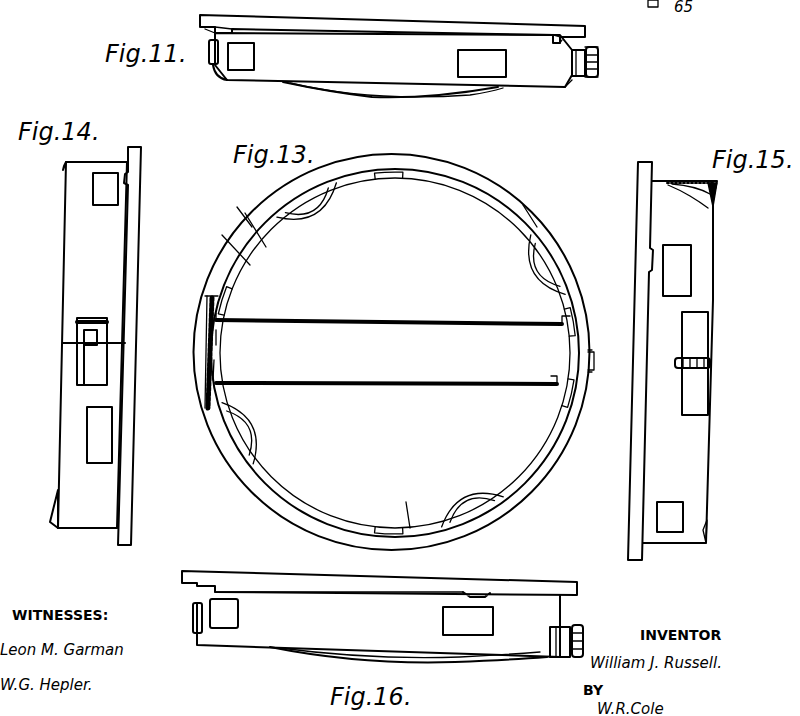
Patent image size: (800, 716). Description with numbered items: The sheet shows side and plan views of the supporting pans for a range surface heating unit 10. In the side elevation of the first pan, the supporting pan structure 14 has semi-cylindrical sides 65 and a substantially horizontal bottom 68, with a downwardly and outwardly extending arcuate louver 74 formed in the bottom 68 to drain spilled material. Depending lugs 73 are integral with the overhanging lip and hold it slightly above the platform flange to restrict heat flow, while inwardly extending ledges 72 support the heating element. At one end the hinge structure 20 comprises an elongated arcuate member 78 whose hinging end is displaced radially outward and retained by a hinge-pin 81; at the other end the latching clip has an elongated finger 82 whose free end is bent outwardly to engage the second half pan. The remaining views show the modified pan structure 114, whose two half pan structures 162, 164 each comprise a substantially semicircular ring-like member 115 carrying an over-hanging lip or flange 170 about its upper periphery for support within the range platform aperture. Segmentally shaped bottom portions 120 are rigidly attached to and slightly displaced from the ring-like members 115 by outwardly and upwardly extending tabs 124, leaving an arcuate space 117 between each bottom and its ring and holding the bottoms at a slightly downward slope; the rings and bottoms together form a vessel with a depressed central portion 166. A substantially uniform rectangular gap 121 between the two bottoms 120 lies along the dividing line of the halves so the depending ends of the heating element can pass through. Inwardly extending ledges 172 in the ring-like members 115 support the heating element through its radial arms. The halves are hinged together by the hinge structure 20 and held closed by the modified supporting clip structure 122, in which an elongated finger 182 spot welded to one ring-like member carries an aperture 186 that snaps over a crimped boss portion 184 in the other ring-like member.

In FIG. 11, the range surface heating unit 10 is at (393, 74).
In FIG. 11, the supporting pan structure 14 is at (316, 40).
In FIG. 11, the hinge structure 20 is at (598, 63).
In FIG. 13, the hinge structure 20 is at (591, 357).
In FIG. 15, the hinge structure 20 is at (705, 361).
In FIG. 16, the hinge structure 20 is at (572, 630).
In FIG. 11, the semi-cylindrical sides 65 is at (213, 32).
In FIG. 11, the bottom 68 is at (254, 75).
In FIG. 11, the ledges 72 is at (243, 62).
In FIG. 11, the depending lugs 73 is at (232, 28).
In FIG. 11, the arcuate louvers 74 is at (368, 106).
In FIG. 11, the elongated arcuate member 78 is at (572, 68).
In FIG. 11, the hinge-pin 81 is at (596, 50).
In FIG. 13, the hinge-pin 81 is at (593, 366).
In FIG. 15, the hinge-pin 81 is at (680, 366).
In FIG. 16, the hinge-pin 81 is at (579, 625).
In FIG. 11, the elongated finger 82 is at (214, 64).
In FIG. 14, the modified pan structure 114 is at (70, 230).
In FIG. 13, the modified pan structure 114 is at (232, 214).
In FIG. 15, the modified pan structure 114 is at (656, 228).
In FIG. 16, the modified pan structure 114 is at (197, 598).
In FIG. 14, the ring-like member 115 is at (82, 520).
In FIG. 13, the ring-like member 115 is at (485, 190).
In FIG. 15, the ring-like member 115 is at (662, 186).
In FIG. 16, the ring-like member 115 is at (228, 640).
In FIG. 13, the arcuate space 117 is at (522, 230).
In FIG. 13, the segmentally shaped bottom portions 120 is at (430, 200).
In FIG. 13, the rectangular gap 121 is at (500, 375).
In FIG. 14, the supporting clip structure 122 is at (78, 382).
In FIG. 13, the supporting clip structure 122 is at (205, 330).
In FIG. 16, the supporting clip structure 122 is at (193, 628).
In FIG. 14, the tabs 124 is at (65, 163).
In FIG. 13, the tabs 124 is at (394, 180).
In FIG. 15, the tabs 124 is at (713, 195).
In FIG. 14, the half pan structure 162 is at (113, 242).
In FIG. 13, the half pan structure 162 is at (248, 258).
In FIG. 15, the half pan structure 162 is at (656, 205).
In FIG. 14, the half pan structure 164 is at (113, 486).
In FIG. 13, the half pan structure 164 is at (290, 483).
In FIG. 15, the half pan structure 164 is at (658, 455).
In FIG. 16, the half pan structure 164 is at (418, 595).
In FIG. 13, the depressed central portion 166 is at (500, 215).
In FIG. 15, the depressed central portion 166 is at (695, 182).
In FIG. 14, the over-hanging lip or flange 170 is at (138, 157).
In FIG. 13, the over-hanging lip or flange 170 is at (500, 522).
In FIG. 15, the over-hanging lip or flange 170 is at (643, 278).
In FIG. 16, the over-hanging lip or flange 170 is at (248, 580).
In FIG. 13, the inwardly extending ledges 172 is at (304, 210).
In FIG. 14, the elongated finger 182 is at (83, 368).
In FIG. 13, the elongated finger 182 is at (208, 364).
In FIG. 14, the crimped boss portion 184 is at (97, 337).
In FIG. 13, the crimped boss portion 184 is at (214, 345).
In FIG. 14, the aperture 186 is at (85, 338).
In FIG. 13, the aperture 186 is at (206, 343).